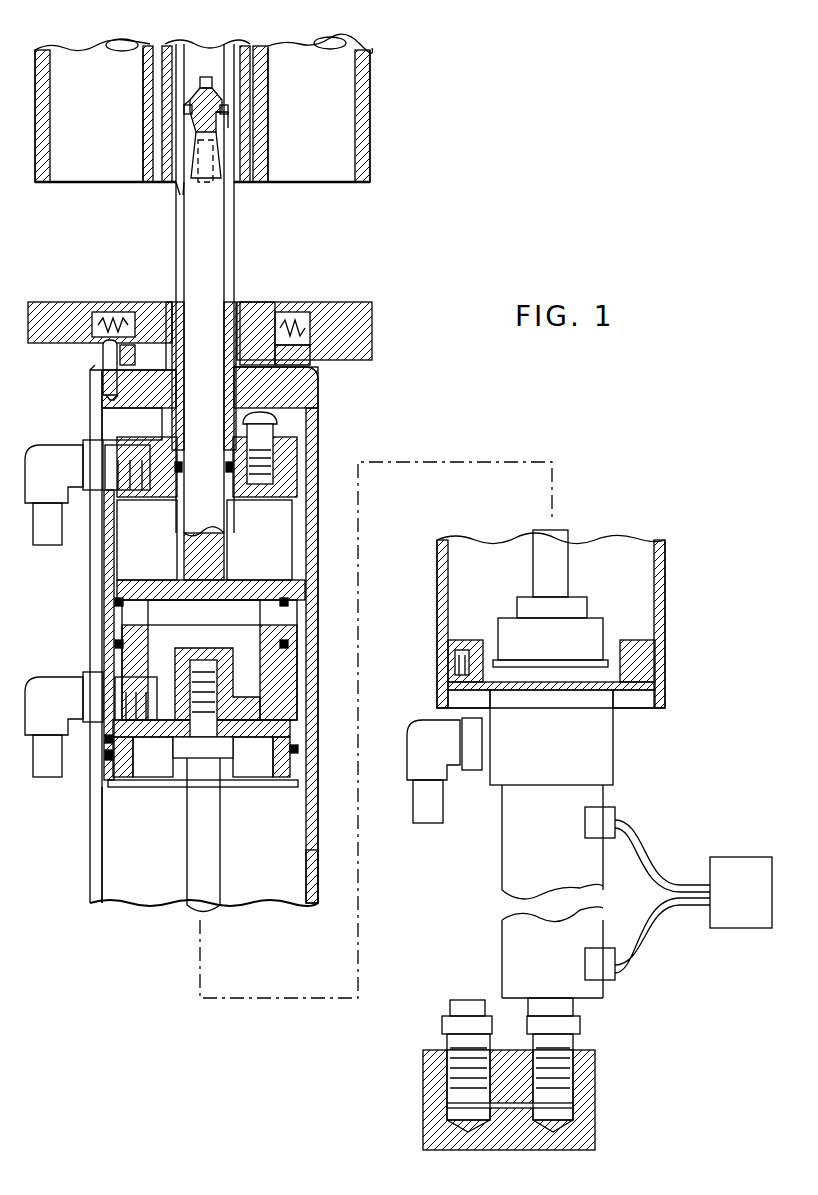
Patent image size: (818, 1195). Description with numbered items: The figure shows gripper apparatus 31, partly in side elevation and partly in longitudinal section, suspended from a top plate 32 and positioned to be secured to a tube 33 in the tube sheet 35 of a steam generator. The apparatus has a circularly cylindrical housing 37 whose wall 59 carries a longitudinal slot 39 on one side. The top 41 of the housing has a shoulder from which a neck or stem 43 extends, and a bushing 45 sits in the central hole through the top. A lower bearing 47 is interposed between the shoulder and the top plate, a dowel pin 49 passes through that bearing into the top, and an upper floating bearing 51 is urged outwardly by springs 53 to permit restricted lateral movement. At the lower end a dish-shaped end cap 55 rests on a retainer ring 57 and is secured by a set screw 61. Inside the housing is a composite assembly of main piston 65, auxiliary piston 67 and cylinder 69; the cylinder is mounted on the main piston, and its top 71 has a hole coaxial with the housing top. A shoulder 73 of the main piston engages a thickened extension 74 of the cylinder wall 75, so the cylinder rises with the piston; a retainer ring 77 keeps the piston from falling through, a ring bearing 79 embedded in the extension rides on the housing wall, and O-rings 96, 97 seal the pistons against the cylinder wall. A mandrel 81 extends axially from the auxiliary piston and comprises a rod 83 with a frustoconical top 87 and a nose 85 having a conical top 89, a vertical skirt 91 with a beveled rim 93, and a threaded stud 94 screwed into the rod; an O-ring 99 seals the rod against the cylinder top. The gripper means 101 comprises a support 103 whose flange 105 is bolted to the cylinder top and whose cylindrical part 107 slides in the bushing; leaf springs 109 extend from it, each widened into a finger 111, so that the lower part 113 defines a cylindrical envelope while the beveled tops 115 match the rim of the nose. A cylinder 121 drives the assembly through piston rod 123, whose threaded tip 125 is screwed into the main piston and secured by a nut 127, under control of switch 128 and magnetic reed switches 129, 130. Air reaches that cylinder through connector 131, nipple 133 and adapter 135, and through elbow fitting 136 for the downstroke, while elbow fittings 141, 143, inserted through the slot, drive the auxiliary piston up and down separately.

The gripper apparatus 31 is at (70, 878).
The top plate 32 is at (372, 305).
The tube 33 is at (245, 45).
The tube sheet 35 is at (372, 78).
The housing 37 is at (318, 898).
The longitudinal slot 39 is at (100, 567).
The top of the housing 41 is at (330, 388).
The neck or stem 43 is at (258, 325).
The bushing 45 is at (178, 355).
The lower bearing 47 is at (312, 368).
The dowel pin 49 is at (103, 357).
The upper floating bearing 51 is at (345, 325).
The springs 53 is at (112, 310).
The housing end cap 55 is at (655, 660).
The retainer ring 57 is at (630, 692).
The wall of the housing 59 is at (662, 590).
The set screw 61 is at (462, 652).
The main piston 65 is at (285, 668).
The auxiliary piston 67 is at (268, 588).
The cylinder 69 is at (298, 531).
The top of the cylinder 71 is at (308, 463).
The shoulder 73 is at (290, 750).
The thickened extension 74 is at (108, 735).
The wall of the cylinder 75 is at (298, 588).
The retainer ring 77 is at (112, 787).
The ring bearing 79 is at (105, 758).
The actuator or mandrel 81 is at (220, 207).
The rod 83 is at (185, 240).
The nose 85 is at (207, 72).
The top of the rod 87 is at (215, 166).
The conical top 89 is at (205, 88).
The skirt 91 is at (187, 113).
The rim 93 is at (222, 110).
The threaded stud 94 is at (207, 88).
The O-ring 96 is at (115, 644).
The O-ring 97 is at (115, 602).
The O-ring 99 is at (183, 468).
The gripper means 101 is at (226, 292).
The support 103 is at (152, 389).
The flange 105 is at (273, 432).
The cylindrical part 107 is at (176, 302).
The leaf springs 109 is at (234, 236).
The finger 111 is at (222, 128).
The lower part 113 is at (180, 192).
The top of the finger 115 is at (186, 106).
The cylinder 121 is at (613, 765).
The piston rod 123 is at (215, 912).
The threaded tip 125 is at (200, 660).
The nut 127 is at (225, 762).
The switch 128 is at (730, 857).
The magnetic reed switch 129 is at (616, 812).
The magnetic reed switch 130 is at (616, 975).
The connector 131 is at (450, 1065).
The nipple 133 is at (575, 1065).
The adapter 135 is at (590, 1133).
The elbow fitting 136 is at (435, 823).
The elbow fitting 141 is at (45, 680).
The elbow fitting 143 is at (40, 445).